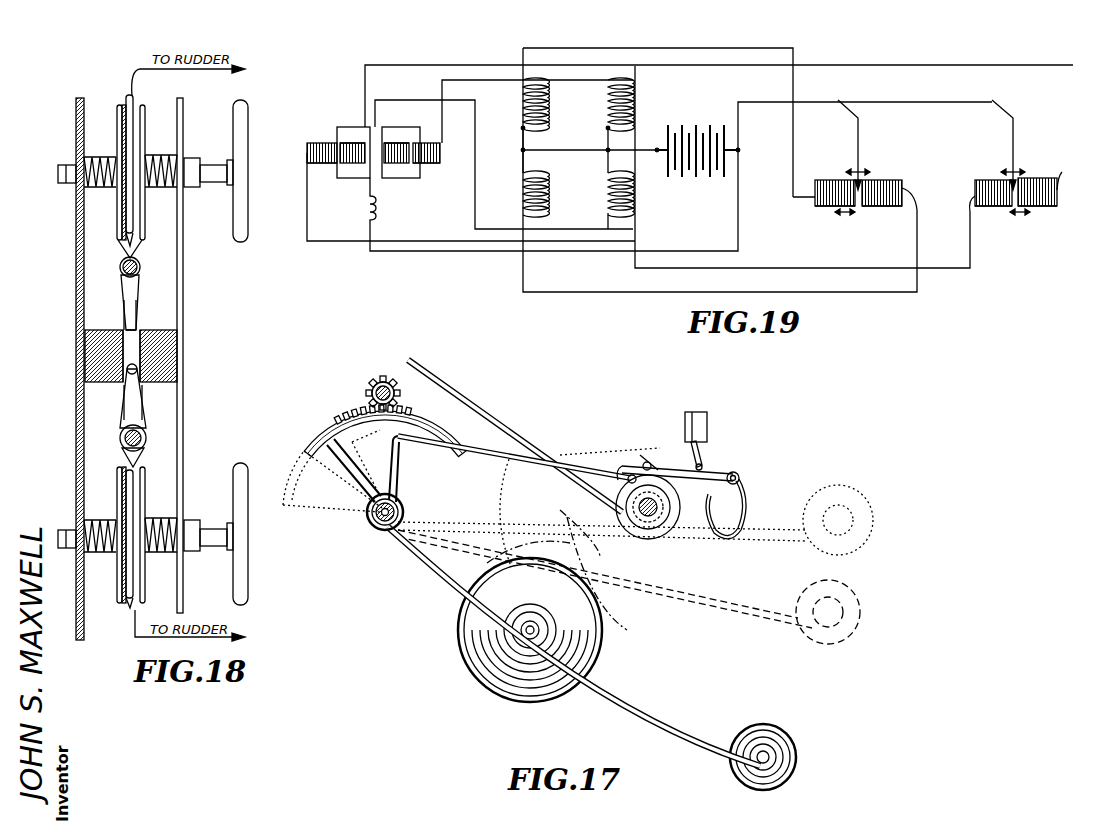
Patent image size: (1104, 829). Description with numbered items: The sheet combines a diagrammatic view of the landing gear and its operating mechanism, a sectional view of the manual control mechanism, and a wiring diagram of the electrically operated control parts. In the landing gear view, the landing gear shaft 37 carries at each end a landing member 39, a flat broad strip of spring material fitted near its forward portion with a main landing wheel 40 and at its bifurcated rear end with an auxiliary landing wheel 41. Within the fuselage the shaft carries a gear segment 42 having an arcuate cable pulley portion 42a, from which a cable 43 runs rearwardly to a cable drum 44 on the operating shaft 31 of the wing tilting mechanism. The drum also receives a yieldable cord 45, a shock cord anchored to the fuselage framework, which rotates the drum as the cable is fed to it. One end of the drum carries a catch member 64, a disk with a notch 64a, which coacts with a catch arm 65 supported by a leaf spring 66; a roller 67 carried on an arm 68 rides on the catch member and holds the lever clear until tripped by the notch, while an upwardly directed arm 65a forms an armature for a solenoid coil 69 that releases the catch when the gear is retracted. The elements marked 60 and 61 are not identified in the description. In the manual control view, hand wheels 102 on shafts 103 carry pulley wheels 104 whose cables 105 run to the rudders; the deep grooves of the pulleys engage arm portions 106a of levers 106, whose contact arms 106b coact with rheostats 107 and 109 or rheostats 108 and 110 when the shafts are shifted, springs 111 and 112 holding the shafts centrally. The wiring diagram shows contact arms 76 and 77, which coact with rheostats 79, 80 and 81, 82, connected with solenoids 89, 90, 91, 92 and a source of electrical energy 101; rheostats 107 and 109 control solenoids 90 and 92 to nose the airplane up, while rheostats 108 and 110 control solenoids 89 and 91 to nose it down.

In FIG. 17, the operating shaft 31 is at (650, 518).
In FIG. 17, the landing gear shaft 37 is at (397, 507).
In FIG. 17, the landing member 39 is at (462, 593).
In FIG. 17, the main landing wheel 40 is at (480, 680).
In FIG. 17, the auxiliary landing wheel 41 is at (742, 745).
In FIG. 17, the gear segment 42 is at (400, 445).
In FIG. 17, the arcuate cable pulley portion 42a is at (340, 418).
In FIG. 17, the cable 43 is at (495, 446).
In FIG. 17, the cable drum 44 is at (655, 520).
In FIG. 17, the yieldable cord 45 is at (416, 368).
In FIG. 17, the pinion 60 is at (375, 382).
In FIG. 17, the pinion shaft 61 is at (390, 380).
In FIG. 17, the catch member 64 is at (668, 532).
In FIG. 17, the notch 64a is at (660, 468).
In FIG. 17, the catch arm 65 is at (628, 466).
In FIG. 17, the upwardly directed arm 65a is at (702, 461).
In FIG. 17, the leaf spring 66 is at (741, 502).
In FIG. 17, the roller 67 is at (630, 476).
In FIG. 17, the arm 68 is at (645, 462).
In FIG. 17, the solenoid coil 69 is at (707, 421).
In FIG. 19, the contact arm 76 is at (860, 148).
In FIG. 19, the contact arm 77 is at (1015, 148).
In FIG. 19, the rheostat 79 is at (835, 180).
In FIG. 19, the rheostat 80 is at (882, 180).
In FIG. 19, the rheostat 81 is at (990, 180).
In FIG. 19, the rheostat 82 is at (1050, 166).
In FIG. 19, the solenoid 89 is at (552, 197).
In FIG. 19, the solenoid 90 is at (550, 125).
In FIG. 19, the solenoid 91 is at (636, 205).
In FIG. 19, the solenoid 92 is at (636, 110).
In FIG. 19, the source of electrical energy 101 is at (705, 125).
In FIG. 18, the hand wheel 102 is at (240, 138).
In FIG. 18, the shaft 103 is at (206, 167).
In FIG. 18, the pulley wheel 104 is at (120, 112).
In FIG. 18, the cable 105 is at (129, 128).
In FIG. 18, the lever 106 is at (130, 292).
In FIG. 19, the lever 106 is at (372, 127).
In FIG. 18, the arm portion 106a is at (122, 240).
In FIG. 18, the contact arm 106b is at (126, 320).
In FIG. 18, the rheostat 107 is at (127, 369).
In FIG. 19, the rheostat 107 is at (350, 143).
In FIG. 18, the rheostat 108 is at (168, 335).
In FIG. 19, the rheostat 108 is at (310, 153).
In FIG. 18, the rheostat 109 is at (100, 347).
In FIG. 19, the rheostat 109 is at (418, 165).
In FIG. 18, the rheostat 110 is at (160, 330).
In FIG. 19, the rheostat 110 is at (395, 143).
In FIG. 18, the spring 111 is at (75, 192).
In FIG. 18, the spring 112 is at (183, 200).